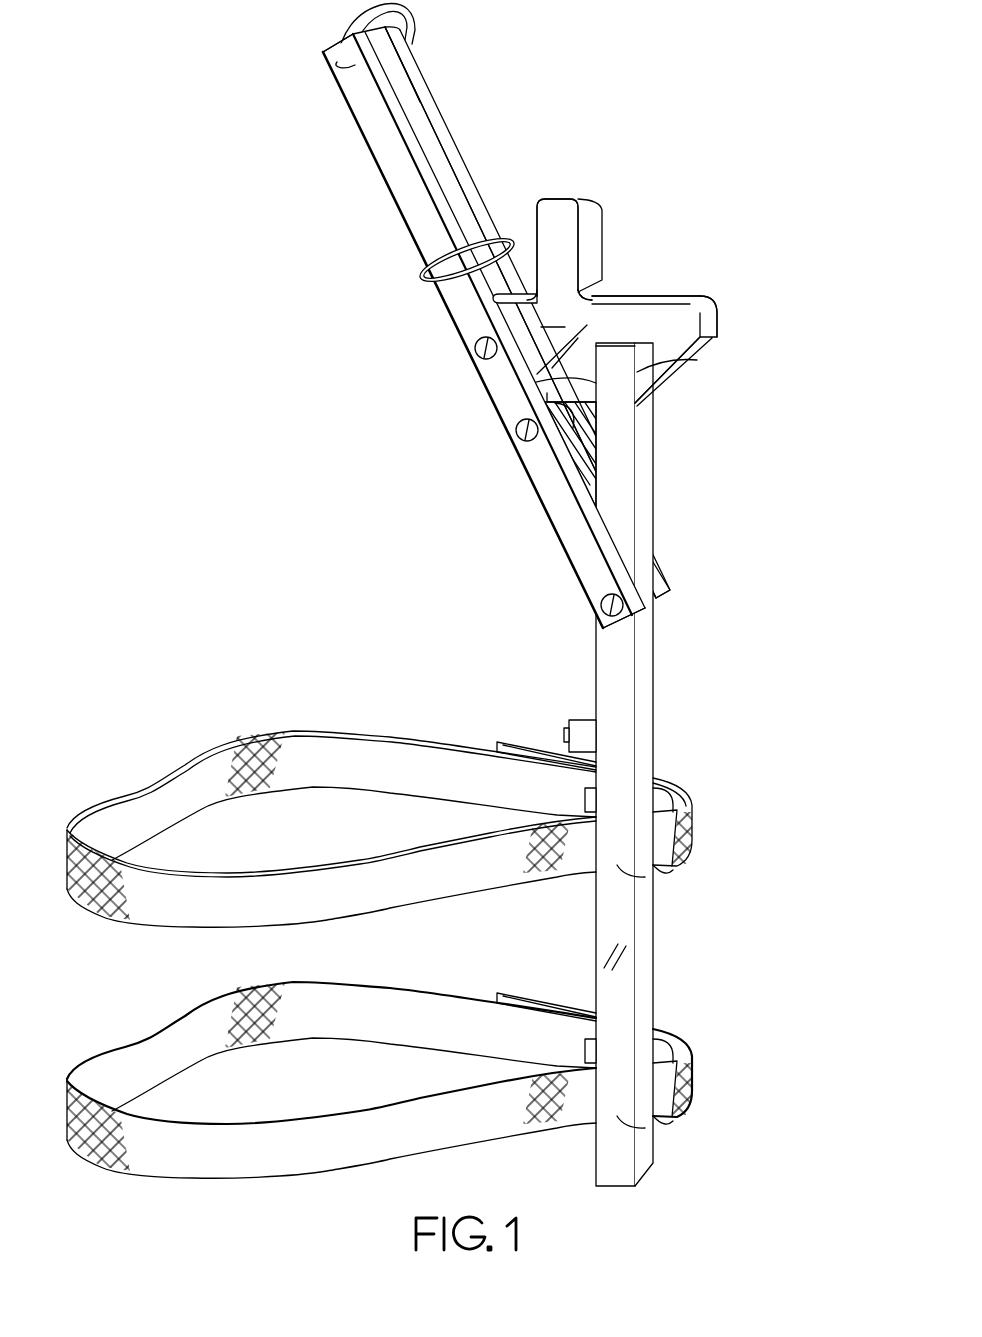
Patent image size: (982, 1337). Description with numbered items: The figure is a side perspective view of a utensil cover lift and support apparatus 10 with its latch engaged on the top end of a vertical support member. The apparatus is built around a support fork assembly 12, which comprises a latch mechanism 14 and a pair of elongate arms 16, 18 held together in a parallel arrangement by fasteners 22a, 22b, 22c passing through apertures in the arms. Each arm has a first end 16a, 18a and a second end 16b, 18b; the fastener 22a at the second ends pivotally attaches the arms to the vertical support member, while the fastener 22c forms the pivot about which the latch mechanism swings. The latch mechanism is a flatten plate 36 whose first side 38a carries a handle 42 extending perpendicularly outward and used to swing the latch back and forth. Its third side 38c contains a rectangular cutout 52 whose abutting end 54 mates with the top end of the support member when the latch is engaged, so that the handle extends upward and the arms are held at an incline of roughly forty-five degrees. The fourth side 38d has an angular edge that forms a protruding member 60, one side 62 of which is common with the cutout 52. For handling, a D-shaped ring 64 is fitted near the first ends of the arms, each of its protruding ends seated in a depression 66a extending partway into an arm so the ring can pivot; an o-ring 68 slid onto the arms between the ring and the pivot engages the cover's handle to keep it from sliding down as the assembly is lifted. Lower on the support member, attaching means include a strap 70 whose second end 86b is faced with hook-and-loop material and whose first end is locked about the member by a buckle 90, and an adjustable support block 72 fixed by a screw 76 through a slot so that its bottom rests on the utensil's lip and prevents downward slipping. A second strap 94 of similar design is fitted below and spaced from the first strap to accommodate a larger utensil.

The utensil cover lift and support apparatus 10 is at (776, 1132).
The support fork assembly 12 is at (456, 144).
The latch mechanism 14 is at (605, 302).
The elongate arm 16 is at (403, 214).
The first end of elongate arm 16a is at (351, 108).
The second end of elongate arm 16b is at (633, 615).
The elongate arm 18 is at (486, 200).
The first end of elongate arm 18a is at (417, 63).
The second end of elongate arm 18b is at (667, 572).
The fastener 22a is at (601, 607).
The fastener 22b is at (518, 441).
The fastener 22c is at (476, 357).
The flatten plate 36 is at (602, 290).
The first side 38a is at (631, 294).
The third side 38c is at (570, 404).
The fourth side 38d is at (718, 323).
The handle 42 is at (565, 198).
The cutout 52 is at (493, 397).
The abutting end 54 is at (620, 340).
The protruding member 60 is at (655, 393).
The side of protruding member 62 is at (660, 367).
The D-shaped ring 64 is at (415, 33).
The depression 66a is at (334, 73).
The o-ring 68 is at (432, 284).
The strap 70 is at (157, 790).
The adjustable support block 72 is at (570, 716).
The screw 76 is at (563, 733).
The second end of strap 86b is at (503, 737).
The buckle 90 is at (664, 1041).
The second strap 94 is at (122, 1050).